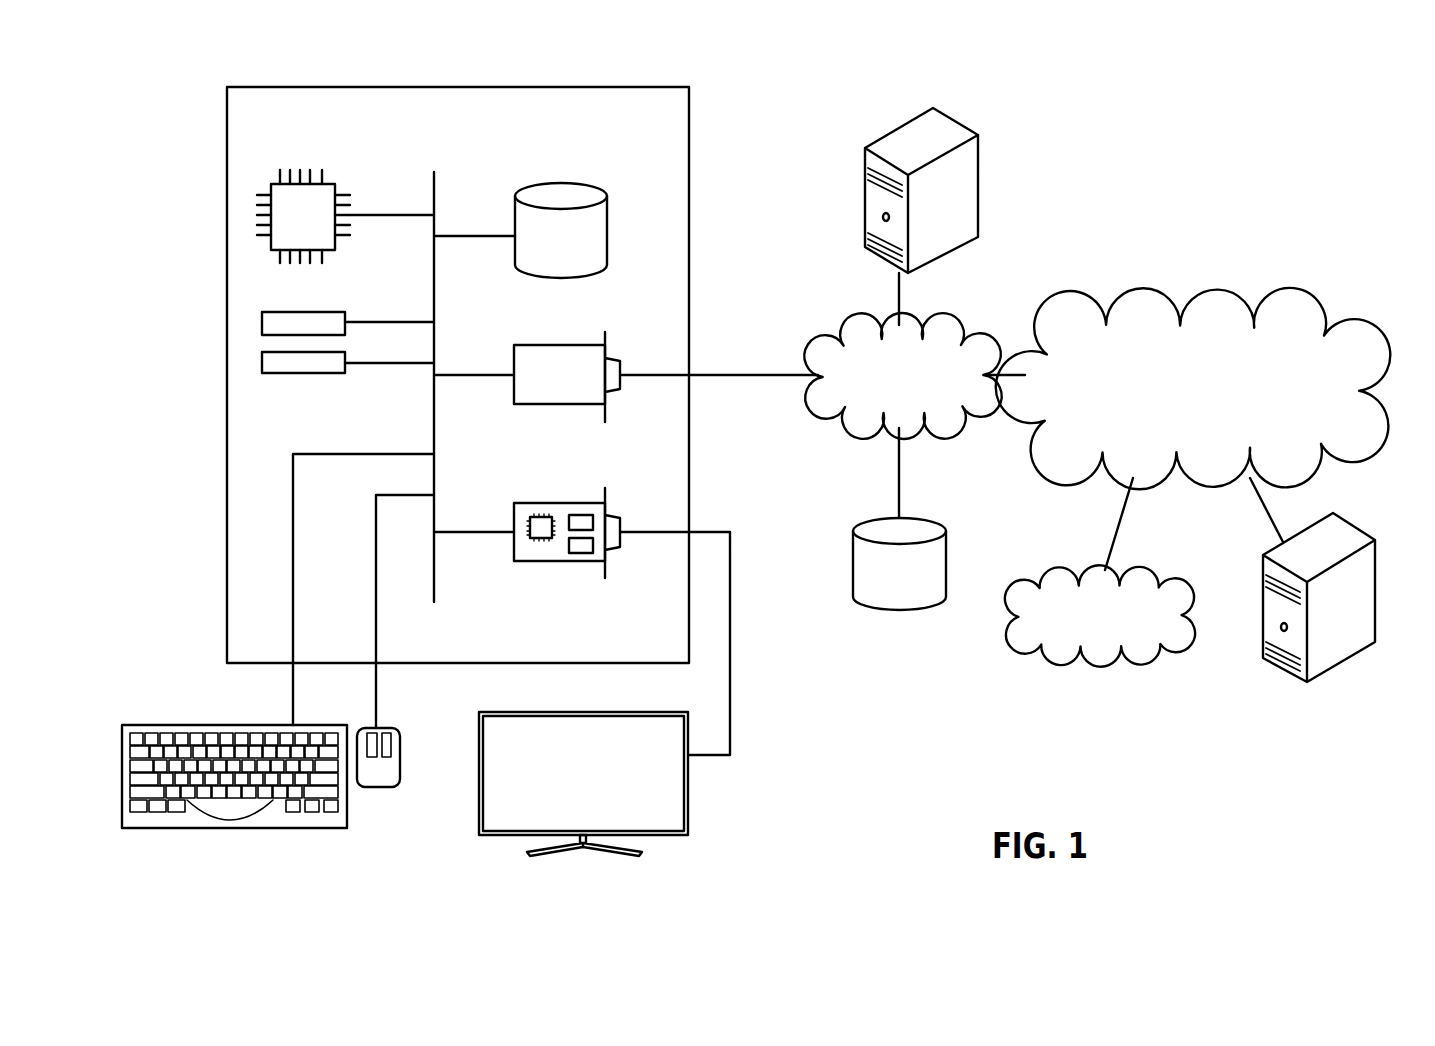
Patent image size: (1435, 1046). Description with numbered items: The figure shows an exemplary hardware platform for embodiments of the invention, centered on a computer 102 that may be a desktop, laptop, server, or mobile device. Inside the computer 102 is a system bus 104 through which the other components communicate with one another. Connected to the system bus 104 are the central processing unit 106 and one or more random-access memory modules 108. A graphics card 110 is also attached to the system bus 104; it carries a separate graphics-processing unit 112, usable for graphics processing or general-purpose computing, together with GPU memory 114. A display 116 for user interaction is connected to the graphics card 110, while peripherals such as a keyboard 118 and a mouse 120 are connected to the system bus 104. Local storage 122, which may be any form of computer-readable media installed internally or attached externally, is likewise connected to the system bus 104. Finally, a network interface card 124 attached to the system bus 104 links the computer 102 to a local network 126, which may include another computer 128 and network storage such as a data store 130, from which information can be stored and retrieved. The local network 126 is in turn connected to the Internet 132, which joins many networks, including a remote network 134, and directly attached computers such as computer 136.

The computer 102 is at (638, 87).
The system bus 104 is at (436, 183).
The central processing unit 106 is at (330, 180).
The random-access memory modules 108 is at (347, 355).
The graphics card 110 is at (599, 604).
The graphics-processing unit 112 is at (538, 540).
The GPU memory 114 is at (580, 553).
The display 116 is at (688, 813).
The keyboard 118 is at (237, 828).
The mouse 120 is at (375, 787).
The local storage 122 is at (608, 215).
The network interface card 124 is at (514, 355).
The local network 126 is at (960, 330).
The computer 128 is at (962, 124).
The data store 130 is at (935, 518).
The Internet 132 is at (1250, 293).
The remote network 134 is at (1160, 571).
The computer 136 is at (1350, 522).